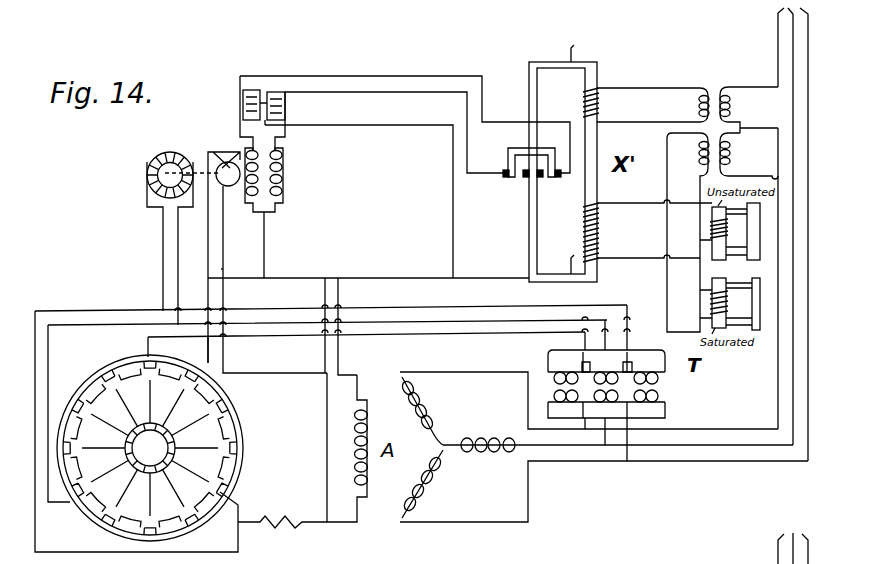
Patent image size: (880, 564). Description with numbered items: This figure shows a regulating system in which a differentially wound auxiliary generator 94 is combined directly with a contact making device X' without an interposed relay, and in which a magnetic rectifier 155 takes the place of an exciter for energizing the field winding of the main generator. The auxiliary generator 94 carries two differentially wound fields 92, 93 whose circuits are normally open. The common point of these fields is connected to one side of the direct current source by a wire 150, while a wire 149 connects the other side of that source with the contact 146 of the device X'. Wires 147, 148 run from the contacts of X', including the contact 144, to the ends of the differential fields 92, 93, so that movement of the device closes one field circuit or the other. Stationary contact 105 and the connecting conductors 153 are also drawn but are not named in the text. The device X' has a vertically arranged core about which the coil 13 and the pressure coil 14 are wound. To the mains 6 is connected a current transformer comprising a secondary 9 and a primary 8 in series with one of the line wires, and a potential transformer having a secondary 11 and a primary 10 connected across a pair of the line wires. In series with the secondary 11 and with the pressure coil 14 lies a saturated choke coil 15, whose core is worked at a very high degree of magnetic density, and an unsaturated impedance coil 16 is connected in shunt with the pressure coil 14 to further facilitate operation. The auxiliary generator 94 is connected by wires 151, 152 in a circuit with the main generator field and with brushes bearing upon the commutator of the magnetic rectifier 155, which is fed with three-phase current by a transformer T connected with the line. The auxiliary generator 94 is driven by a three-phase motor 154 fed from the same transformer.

The 3-phase motor 154 is at (167, 158).
The auxiliary generator 94 is at (227, 156).
The differential field 92 is at (244, 197).
The differential field 93 is at (283, 178).
The wire 148 is at (386, 76).
The wire 147 is at (362, 92).
The wire 149 is at (490, 278).
The wire 150 is at (266, 262).
The wire 151 is at (213, 280).
The wire 152 is at (222, 268).
The conductors 153 is at (285, 318).
The contact 144 is at (505, 173).
The contact 105 is at (555, 180).
The contact 146 is at (524, 178).
The coil 13 is at (598, 100).
The pressure coil 14 is at (598, 232).
The current transformer secondary 9 is at (698, 106).
The current transformer primary 8 is at (732, 106).
The potential transformer secondary 11 is at (688, 232).
The potential transformer primary 10 is at (732, 153).
The unsaturated impedance coil 16 is at (712, 230).
The saturated choke coil 15 is at (712, 303).
The mains 6 is at (793, 282).
The magnetic rectifier 155 is at (230, 428).